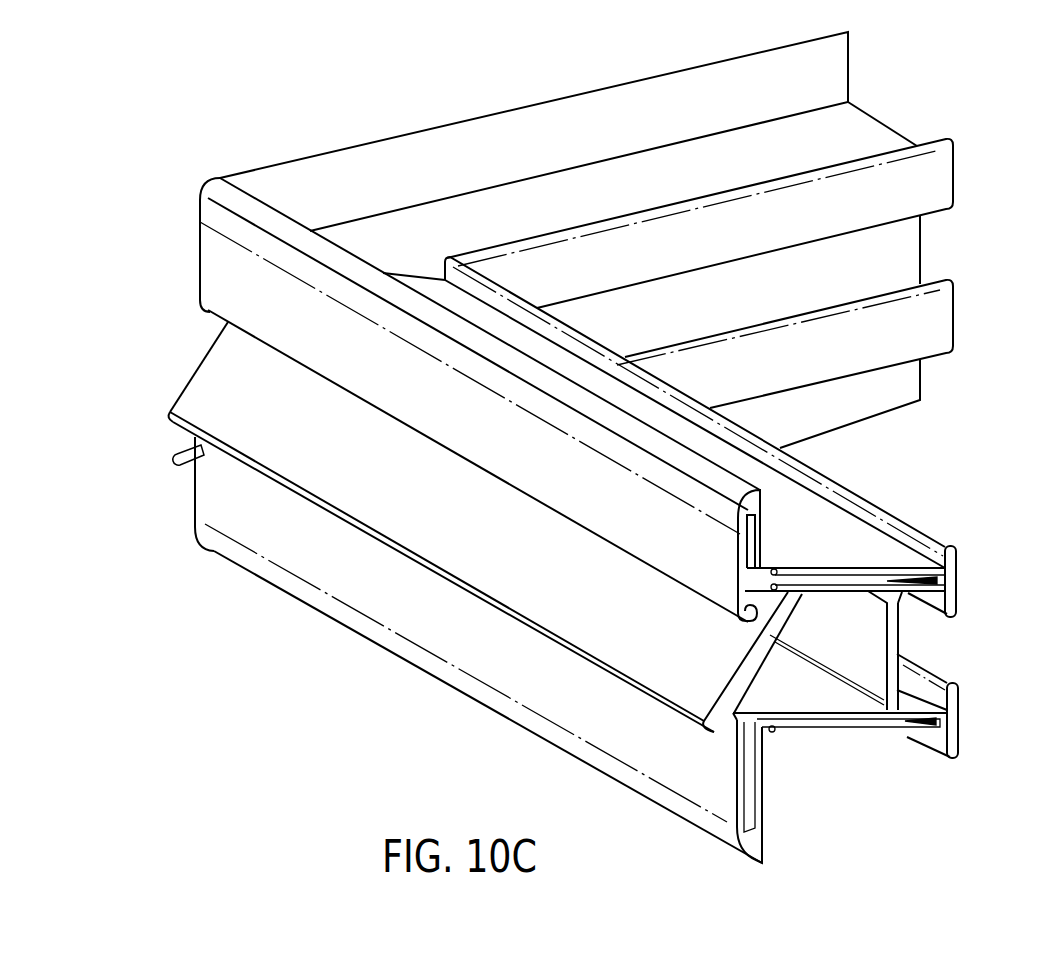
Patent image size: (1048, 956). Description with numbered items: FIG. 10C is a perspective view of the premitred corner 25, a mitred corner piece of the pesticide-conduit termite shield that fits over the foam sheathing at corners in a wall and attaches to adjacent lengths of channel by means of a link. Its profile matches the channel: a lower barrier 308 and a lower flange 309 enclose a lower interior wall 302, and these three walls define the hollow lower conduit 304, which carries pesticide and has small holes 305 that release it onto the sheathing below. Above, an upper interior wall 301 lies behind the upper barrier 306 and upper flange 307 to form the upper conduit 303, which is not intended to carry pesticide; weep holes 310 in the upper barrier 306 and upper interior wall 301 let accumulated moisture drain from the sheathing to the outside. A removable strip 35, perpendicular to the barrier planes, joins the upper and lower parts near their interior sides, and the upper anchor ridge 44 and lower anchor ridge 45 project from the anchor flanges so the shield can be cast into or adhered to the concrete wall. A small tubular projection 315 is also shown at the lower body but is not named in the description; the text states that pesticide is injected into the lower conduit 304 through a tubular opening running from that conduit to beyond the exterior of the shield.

The premitred corner 25 is at (335, 631).
The upper interior wall 301 is at (487, 145).
The lower interior wall 302 is at (912, 382).
The upper conduit 303 is at (890, 578).
The lower conduit 304 is at (875, 727).
The small holes 305 is at (774, 738).
The upper barrier 306 is at (845, 589).
The upper flange 307 is at (737, 560).
The lower barrier 308 is at (824, 710).
The lower flange 309 is at (738, 790).
The weep holes 310 is at (776, 566).
The locating pin 315 is at (183, 466).
The upper anchor ridge 44 is at (955, 175).
The lower anchor ridge 45 is at (942, 312).
The removable strip 35 is at (922, 250).